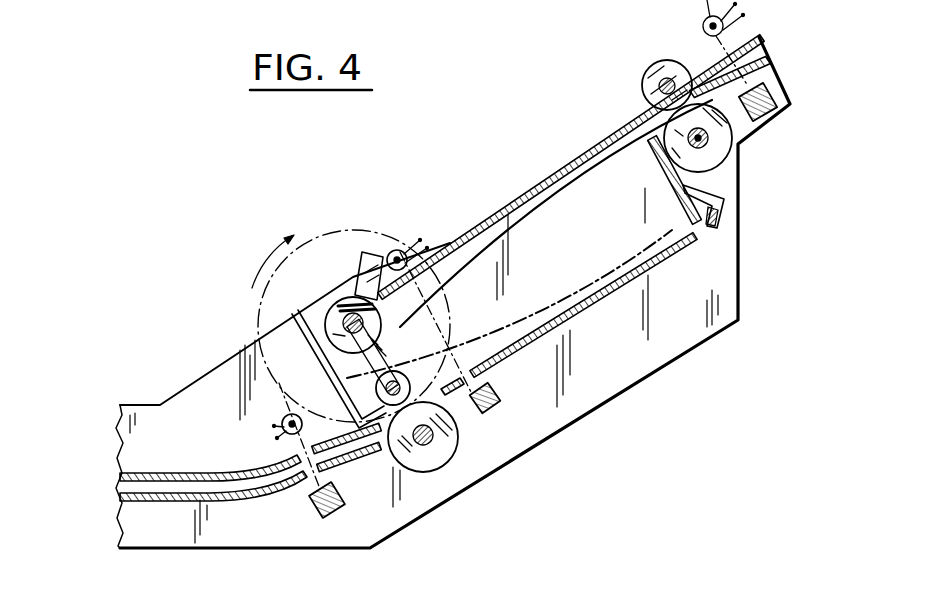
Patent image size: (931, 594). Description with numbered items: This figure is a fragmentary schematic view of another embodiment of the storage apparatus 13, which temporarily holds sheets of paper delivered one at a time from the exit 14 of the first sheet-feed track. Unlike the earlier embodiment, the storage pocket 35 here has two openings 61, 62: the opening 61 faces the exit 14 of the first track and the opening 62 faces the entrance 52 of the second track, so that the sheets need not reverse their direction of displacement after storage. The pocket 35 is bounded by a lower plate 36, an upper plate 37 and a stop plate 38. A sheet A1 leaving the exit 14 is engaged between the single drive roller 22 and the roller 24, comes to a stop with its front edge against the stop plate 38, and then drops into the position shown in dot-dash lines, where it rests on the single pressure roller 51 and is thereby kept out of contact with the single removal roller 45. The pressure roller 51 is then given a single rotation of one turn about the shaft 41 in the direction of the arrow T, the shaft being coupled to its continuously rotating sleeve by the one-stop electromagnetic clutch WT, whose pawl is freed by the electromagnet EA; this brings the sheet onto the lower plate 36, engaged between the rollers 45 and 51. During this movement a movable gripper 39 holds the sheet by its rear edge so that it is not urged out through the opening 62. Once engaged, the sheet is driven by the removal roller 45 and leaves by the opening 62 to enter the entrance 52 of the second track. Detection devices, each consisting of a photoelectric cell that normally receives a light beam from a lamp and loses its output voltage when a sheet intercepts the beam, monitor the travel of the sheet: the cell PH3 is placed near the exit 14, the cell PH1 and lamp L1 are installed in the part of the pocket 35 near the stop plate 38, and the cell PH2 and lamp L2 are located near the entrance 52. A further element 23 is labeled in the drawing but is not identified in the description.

The storage apparatus 13 is at (428, 210).
The exit of first sheet-feed track 14 is at (707, 78).
The drive roller 22 is at (713, 160).
The roller shaft 23 is at (738, 145).
The roller 24 is at (645, 84).
The storage pocket 35 is at (620, 240).
The lower plate 36 is at (587, 305).
The upper plate 37 is at (545, 180).
The stop plate 38 is at (300, 343).
The movable gripper 39 is at (722, 212).
The shaft 41 is at (384, 362).
The removal roller 45 is at (447, 453).
The pressure roller 51 is at (343, 395).
The entrance of second track 52 is at (293, 492).
The opening 61 is at (643, 140).
The opening 62 is at (360, 452).
The lamp L1 is at (398, 250).
The lamp L2 is at (289, 416).
The photoelectric cell PH1 is at (490, 412).
The photoelectric cell PH2 is at (332, 520).
The photoelectric cell PH3 is at (771, 100).
The electromagnet EA is at (360, 272).
The one-stop electromagnetic clutch WT is at (333, 307).
The sheet A1 is at (556, 196).
The arrow T is at (271, 261).